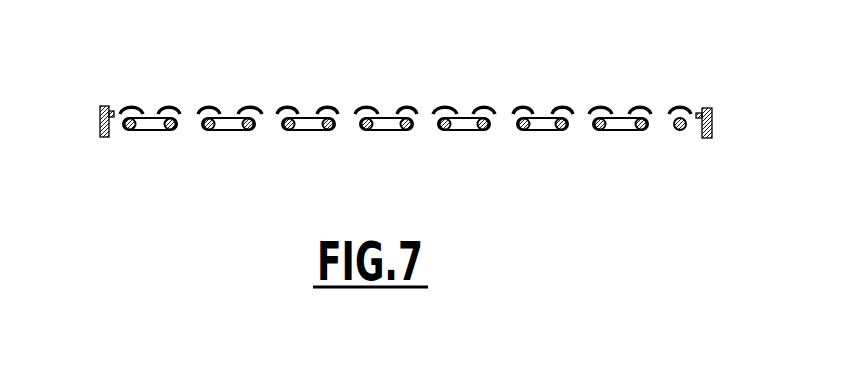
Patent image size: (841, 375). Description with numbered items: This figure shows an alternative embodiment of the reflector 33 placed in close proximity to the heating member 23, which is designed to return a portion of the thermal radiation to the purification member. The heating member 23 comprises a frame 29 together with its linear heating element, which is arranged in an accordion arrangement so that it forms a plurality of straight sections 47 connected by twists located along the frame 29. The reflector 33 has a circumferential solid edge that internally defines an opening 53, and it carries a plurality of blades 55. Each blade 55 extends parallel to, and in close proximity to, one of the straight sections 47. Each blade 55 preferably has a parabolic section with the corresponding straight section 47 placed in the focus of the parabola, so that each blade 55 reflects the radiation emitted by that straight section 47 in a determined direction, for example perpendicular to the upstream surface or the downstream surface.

The reflector 33 is at (163, 82).
The heating member 23 is at (148, 138).
The frame 29 is at (712, 128).
The straight sections 47 is at (205, 129).
The opening 53 is at (307, 110).
The blades 55 is at (642, 107).